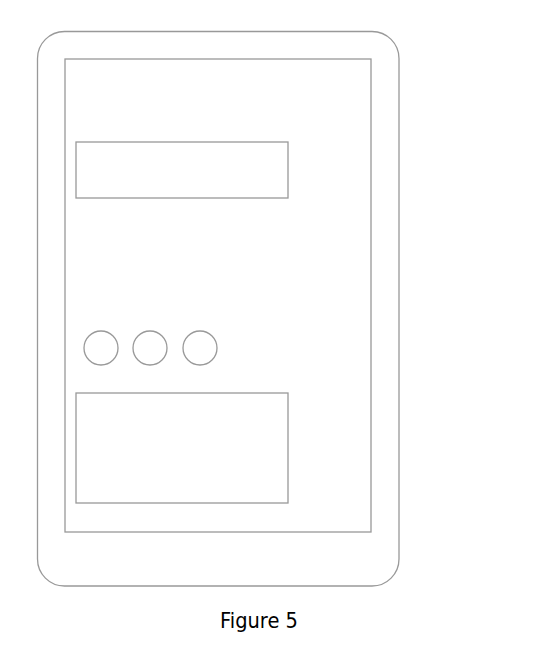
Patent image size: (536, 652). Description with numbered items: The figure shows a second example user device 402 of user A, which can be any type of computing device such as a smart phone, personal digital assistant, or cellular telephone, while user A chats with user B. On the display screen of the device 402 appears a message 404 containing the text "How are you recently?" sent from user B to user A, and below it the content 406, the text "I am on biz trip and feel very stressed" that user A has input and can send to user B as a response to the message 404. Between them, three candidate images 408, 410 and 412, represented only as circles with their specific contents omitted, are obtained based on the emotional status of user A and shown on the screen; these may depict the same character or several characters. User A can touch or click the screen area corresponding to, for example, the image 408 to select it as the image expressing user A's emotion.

The device 402 is at (399, 60).
The message 404 is at (288, 172).
The content 406 is at (288, 402).
The image 408 is at (102, 330).
The image 410 is at (151, 330).
The image 412 is at (201, 330).